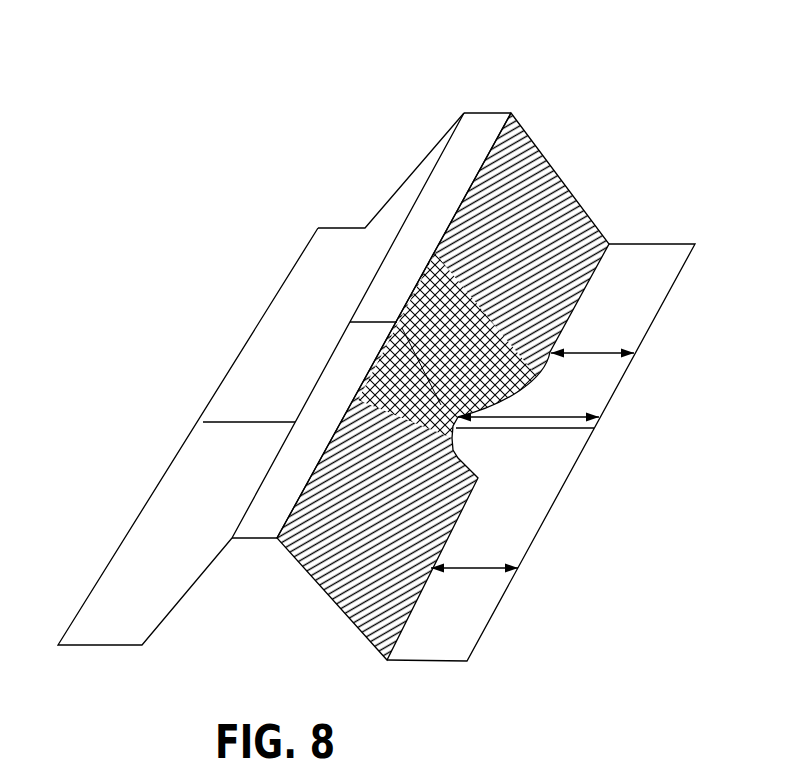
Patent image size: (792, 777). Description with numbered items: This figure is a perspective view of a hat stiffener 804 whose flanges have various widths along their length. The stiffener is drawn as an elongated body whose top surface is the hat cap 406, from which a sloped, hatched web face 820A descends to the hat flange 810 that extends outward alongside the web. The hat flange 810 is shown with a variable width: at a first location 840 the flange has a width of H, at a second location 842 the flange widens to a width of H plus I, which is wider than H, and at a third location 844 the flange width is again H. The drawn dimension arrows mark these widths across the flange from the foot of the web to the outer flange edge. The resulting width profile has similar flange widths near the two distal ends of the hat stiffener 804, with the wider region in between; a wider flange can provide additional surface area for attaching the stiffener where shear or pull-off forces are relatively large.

The hat stiffener 804 is at (258, 128).
The hat cap 406 is at (480, 132).
The inclined contact surface 820A is at (540, 210).
The hat flange 810 is at (633, 303).
The location of the hat flange 840 is at (618, 335).
The location of the hat flange 842 is at (589, 399).
The location of the hat flange 844 is at (503, 550).